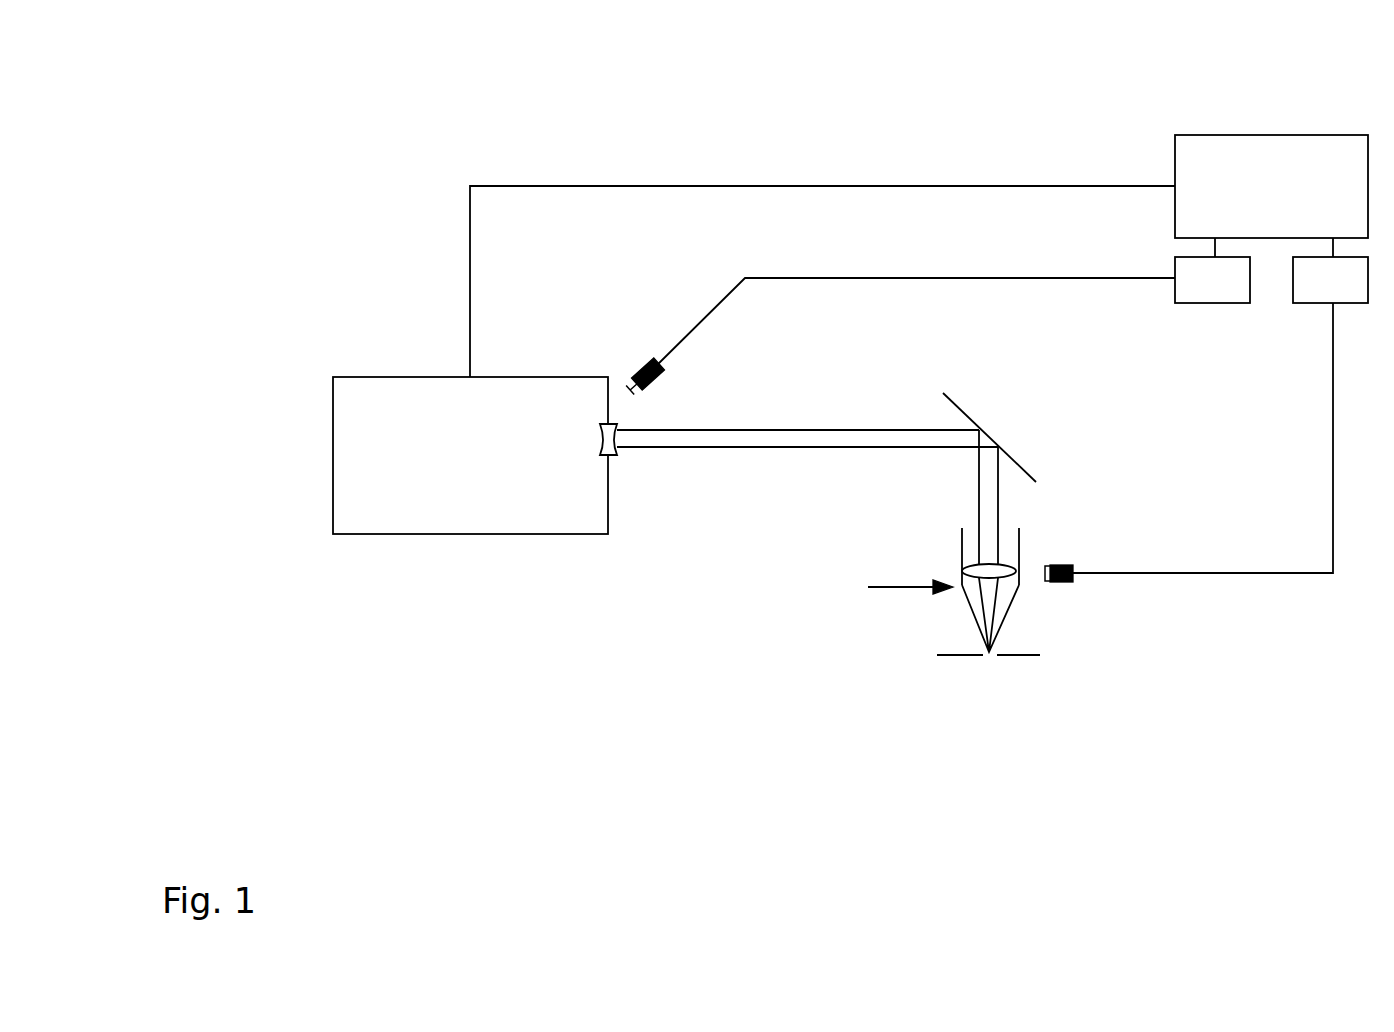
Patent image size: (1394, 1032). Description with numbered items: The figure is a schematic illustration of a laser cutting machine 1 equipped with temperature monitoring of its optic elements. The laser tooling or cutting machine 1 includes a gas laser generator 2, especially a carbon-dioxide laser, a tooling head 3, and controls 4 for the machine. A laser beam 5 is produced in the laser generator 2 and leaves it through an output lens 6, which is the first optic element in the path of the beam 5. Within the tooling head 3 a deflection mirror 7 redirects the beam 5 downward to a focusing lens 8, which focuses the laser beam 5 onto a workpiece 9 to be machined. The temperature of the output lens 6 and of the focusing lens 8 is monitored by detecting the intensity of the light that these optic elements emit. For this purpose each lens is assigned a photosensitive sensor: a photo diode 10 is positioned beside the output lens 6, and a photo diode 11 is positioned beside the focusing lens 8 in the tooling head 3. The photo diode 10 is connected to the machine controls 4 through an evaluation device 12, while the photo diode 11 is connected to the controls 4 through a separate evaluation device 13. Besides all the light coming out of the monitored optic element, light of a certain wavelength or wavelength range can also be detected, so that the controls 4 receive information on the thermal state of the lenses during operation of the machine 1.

The laser tooling or cutting machine 1 is at (827, 159).
The laser generator 2 is at (456, 472).
The tooling head 3 is at (895, 587).
The controls 4 is at (1266, 205).
The laser beam 5 is at (804, 442).
The output lens 6 is at (620, 458).
The deflection mirror 7 is at (987, 438).
The focusing lens 8 is at (983, 575).
The workpiece 9 is at (1030, 655).
The photo diode 10 is at (640, 366).
The photo diode 11 is at (1067, 565).
The evaluation device 12 is at (1196, 297).
The evaluation device 13 is at (1314, 297).